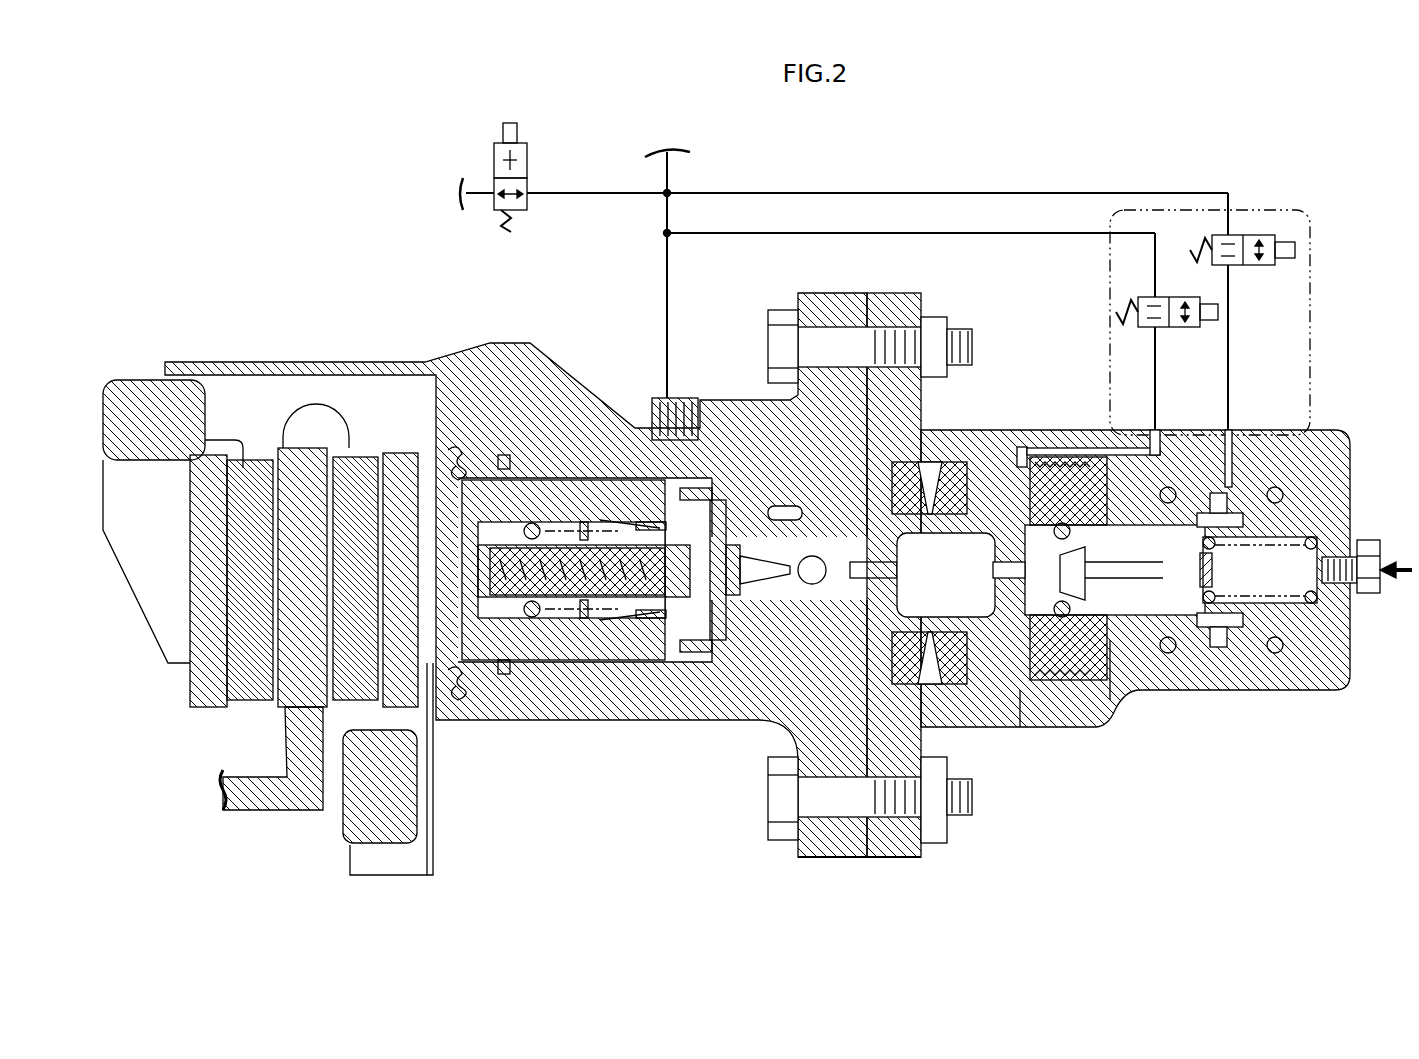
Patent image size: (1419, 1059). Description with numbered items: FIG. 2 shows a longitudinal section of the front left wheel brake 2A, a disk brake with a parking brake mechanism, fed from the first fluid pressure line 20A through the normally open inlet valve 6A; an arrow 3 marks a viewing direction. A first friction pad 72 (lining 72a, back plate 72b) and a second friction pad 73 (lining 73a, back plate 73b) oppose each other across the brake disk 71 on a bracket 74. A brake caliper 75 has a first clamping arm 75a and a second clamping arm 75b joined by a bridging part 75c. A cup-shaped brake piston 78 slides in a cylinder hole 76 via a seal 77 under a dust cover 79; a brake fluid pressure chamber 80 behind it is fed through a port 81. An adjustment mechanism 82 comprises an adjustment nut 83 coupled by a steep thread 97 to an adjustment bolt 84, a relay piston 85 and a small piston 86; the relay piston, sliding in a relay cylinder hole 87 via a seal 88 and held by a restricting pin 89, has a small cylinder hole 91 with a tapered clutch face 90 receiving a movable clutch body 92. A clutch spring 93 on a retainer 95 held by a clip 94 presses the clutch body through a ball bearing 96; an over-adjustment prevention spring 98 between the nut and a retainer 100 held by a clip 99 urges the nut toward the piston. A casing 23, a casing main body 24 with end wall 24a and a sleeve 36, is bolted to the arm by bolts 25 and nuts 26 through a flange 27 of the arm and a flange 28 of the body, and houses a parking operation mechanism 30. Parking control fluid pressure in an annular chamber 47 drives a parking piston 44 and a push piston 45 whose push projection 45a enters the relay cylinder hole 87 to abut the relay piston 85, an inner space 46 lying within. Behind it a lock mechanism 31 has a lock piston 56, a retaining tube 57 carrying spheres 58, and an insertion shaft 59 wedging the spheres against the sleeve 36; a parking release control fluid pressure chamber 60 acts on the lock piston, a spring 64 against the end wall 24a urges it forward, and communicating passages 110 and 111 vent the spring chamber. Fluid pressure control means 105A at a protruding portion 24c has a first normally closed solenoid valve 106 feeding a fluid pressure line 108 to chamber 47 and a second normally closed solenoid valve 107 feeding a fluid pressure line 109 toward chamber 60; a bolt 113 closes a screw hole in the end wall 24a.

The front left wheel brake 2A is at (433, 818).
The fluid supply direction 3 is at (1399, 555).
The inlet valve 6A is at (527, 168).
The first fluid pressure line 20A is at (478, 193).
The casing 23 is at (1200, 690).
The casing main body 24 is at (1065, 725).
The end wall 24a is at (1348, 467).
The protruding portion 24c is at (1263, 210).
The bolts 25 is at (778, 340).
The nuts 26 is at (933, 320).
The flange 27 is at (802, 855).
The flange 28 is at (915, 840).
The parking operation mechanism 30 is at (925, 462).
The lock mechanism 31 is at (1153, 712).
The cylindrical sleeve 36 is at (760, 482).
The parking piston 44 is at (1020, 700).
The push piston 45 is at (923, 734).
The push projection 45a is at (859, 575).
The chamber 46 is at (940, 628).
The parking control fluid pressure chamber 47 is at (1022, 447).
The lock piston 56 is at (1232, 630).
The retaining tube 57 is at (1110, 690).
The spheres 58 is at (1107, 523).
The insertion shaft 59 is at (1011, 590).
The parking release control fluid pressure chamber 60 is at (1272, 640).
The spring 64 is at (1318, 540).
The brake disk 71 is at (302, 538).
The first friction pad 72 is at (431, 325).
The lining 72a is at (367, 463).
The back plate 72b is at (400, 463).
The second friction pad 73 is at (260, 325).
The lining 73a is at (263, 476).
The back plate 73b is at (223, 478).
The bracket 74 is at (360, 832).
The brake caliper 75 is at (533, 352).
The first clamping arm 75a is at (633, 715).
The second clamping arm 75b is at (137, 405).
The bridging part 75c is at (318, 370).
The cylinder hole 76 is at (578, 518).
The seal 77 is at (516, 674).
The brake piston 78 is at (470, 670).
The dust cover 79 is at (449, 660).
The brake fluid pressure chamber 80 is at (690, 470).
The port 81 is at (664, 397).
The adjustment mechanism 82 is at (557, 490).
The adjustment nut 83 is at (548, 530).
The adjustment bolt 84 is at (700, 490).
The relay piston 85 is at (778, 640).
The small piston 86 is at (798, 510).
The relay cylinder hole 87 is at (803, 598).
The seal 88 is at (818, 560).
The restricting pin 89 is at (800, 506).
The clutch face 90 is at (727, 500).
The small cylinder hole 91 is at (735, 630).
The movable clutch body 92 is at (722, 640).
The clutch spring 93 is at (636, 635).
The clip 94 is at (678, 650).
The retainer 95 is at (634, 480).
The ball bearing 96 is at (697, 620).
The steep thread 97 is at (578, 638).
The over-adjustment prevention spring 98 is at (565, 522).
The clip 99 is at (613, 645).
The retainer 100 is at (592, 650).
The fluid pressure control means 105A is at (1247, 312).
The first normally closed solenoid valve 106 is at (1177, 327).
The second normally closed solenoid valve 107 is at (1258, 265).
The fluid pressure line 108 is at (1158, 440).
The fluid pressure line 109 is at (1230, 440).
The communicating passage 110 is at (1007, 584).
The communicating passage 111 is at (1003, 572).
The bolt 113 is at (1368, 590).